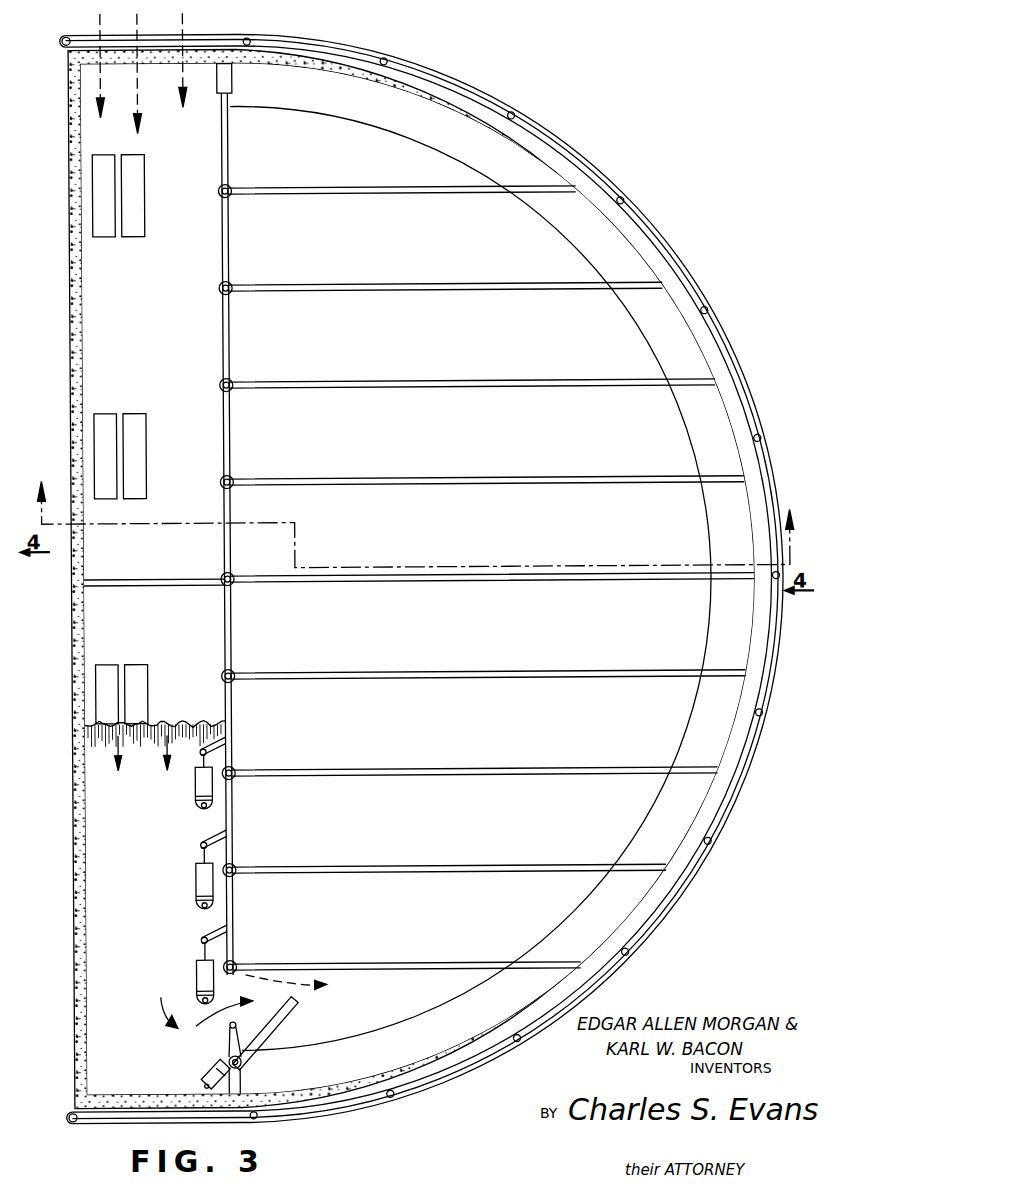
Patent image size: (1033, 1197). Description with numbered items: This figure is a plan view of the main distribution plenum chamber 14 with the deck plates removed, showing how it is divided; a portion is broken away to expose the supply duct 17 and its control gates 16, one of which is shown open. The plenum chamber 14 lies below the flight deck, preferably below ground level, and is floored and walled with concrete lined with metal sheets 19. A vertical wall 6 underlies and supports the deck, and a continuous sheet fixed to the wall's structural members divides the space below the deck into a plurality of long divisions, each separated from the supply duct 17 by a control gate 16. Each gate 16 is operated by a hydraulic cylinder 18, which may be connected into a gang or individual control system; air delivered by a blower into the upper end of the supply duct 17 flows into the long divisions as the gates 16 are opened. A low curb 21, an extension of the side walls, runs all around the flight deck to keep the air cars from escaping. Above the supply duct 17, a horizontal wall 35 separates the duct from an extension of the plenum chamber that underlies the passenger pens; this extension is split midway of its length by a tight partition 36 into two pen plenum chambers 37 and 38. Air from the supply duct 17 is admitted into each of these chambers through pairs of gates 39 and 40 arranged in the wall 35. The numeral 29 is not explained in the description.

The vertical wall 6 is at (393, 386).
The plenum chamber 14 is at (475, 844).
The control gate 16 is at (233, 728).
The supply duct 17 is at (206, 874).
The hydraulic cylinder 18 is at (194, 792).
The metal sheets 19 is at (622, 233).
The curb 21 is at (678, 260).
The fastener 29 is at (573, 158).
The horizontal wall 35 is at (197, 247).
The partition 36 is at (110, 580).
The pen plenum chamber 37 is at (141, 206).
The pen plenum chamber 38 is at (156, 626).
The gate 39 is at (102, 237).
The gate 40 is at (134, 237).